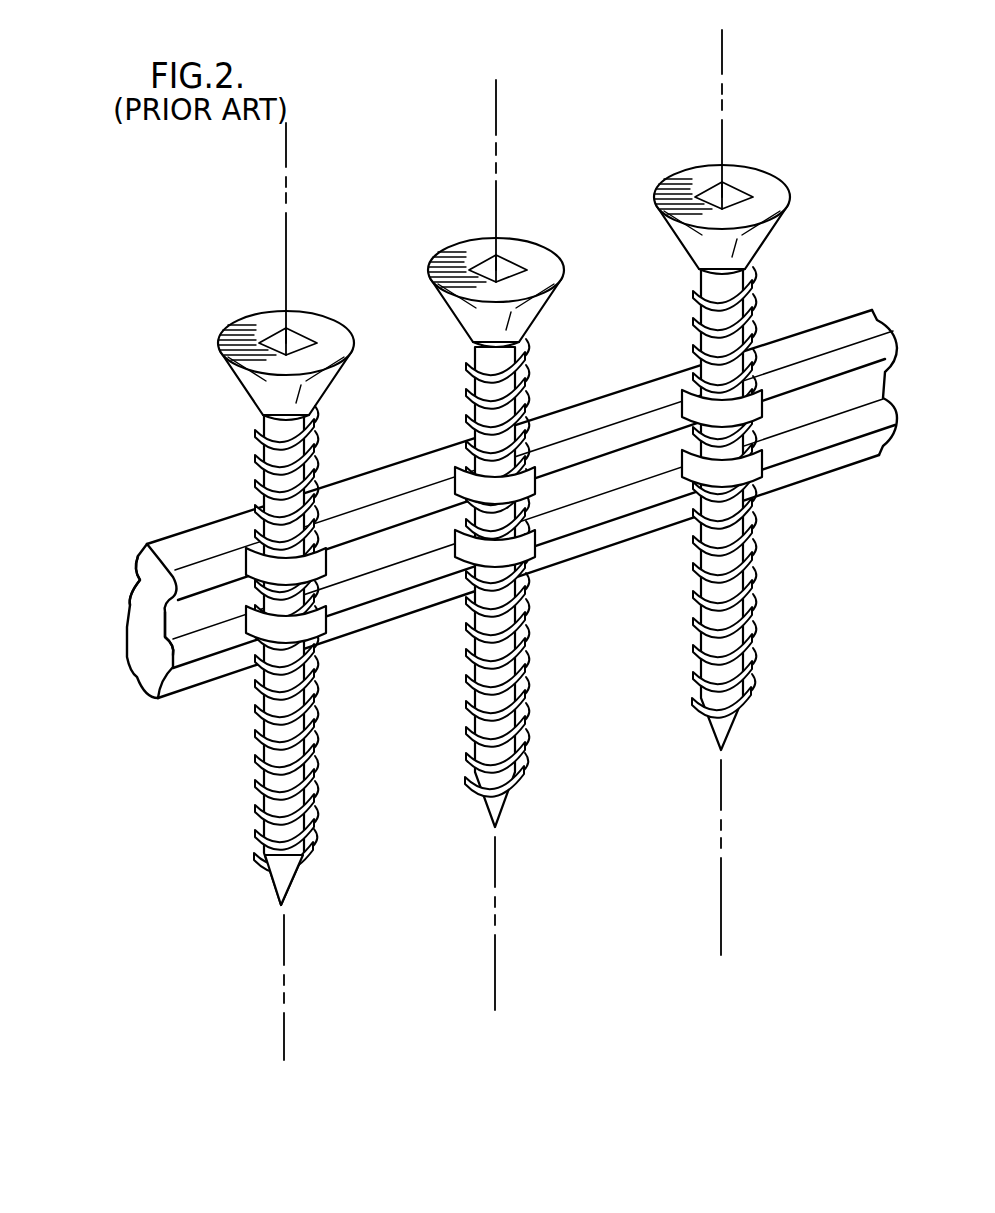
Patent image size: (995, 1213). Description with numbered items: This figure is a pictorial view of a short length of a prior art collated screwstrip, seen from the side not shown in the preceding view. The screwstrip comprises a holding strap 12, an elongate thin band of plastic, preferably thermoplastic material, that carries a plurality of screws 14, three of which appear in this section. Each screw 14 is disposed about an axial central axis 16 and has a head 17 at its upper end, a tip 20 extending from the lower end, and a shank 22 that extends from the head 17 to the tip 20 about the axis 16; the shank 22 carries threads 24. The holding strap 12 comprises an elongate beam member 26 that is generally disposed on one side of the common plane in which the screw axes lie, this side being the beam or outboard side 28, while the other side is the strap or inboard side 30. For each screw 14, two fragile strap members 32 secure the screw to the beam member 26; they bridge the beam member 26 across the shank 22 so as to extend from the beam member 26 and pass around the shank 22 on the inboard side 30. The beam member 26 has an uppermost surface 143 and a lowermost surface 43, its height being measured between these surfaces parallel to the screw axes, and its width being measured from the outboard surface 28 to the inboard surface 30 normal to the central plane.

The holding strap 12 is at (116, 543).
The screw 14 is at (213, 316).
The axial central axis 16 is at (288, 150).
The head 17 is at (330, 318).
The tip 20 is at (282, 907).
The shank 22 is at (307, 805).
The threads 24 is at (314, 760).
The beam member 26 is at (148, 632).
The outboard side 28 is at (134, 615).
The inboard side 30 is at (170, 627).
The strap member 32 is at (333, 563).
The lowermost surface 43 is at (167, 704).
The uppermost surface 143 is at (198, 533).